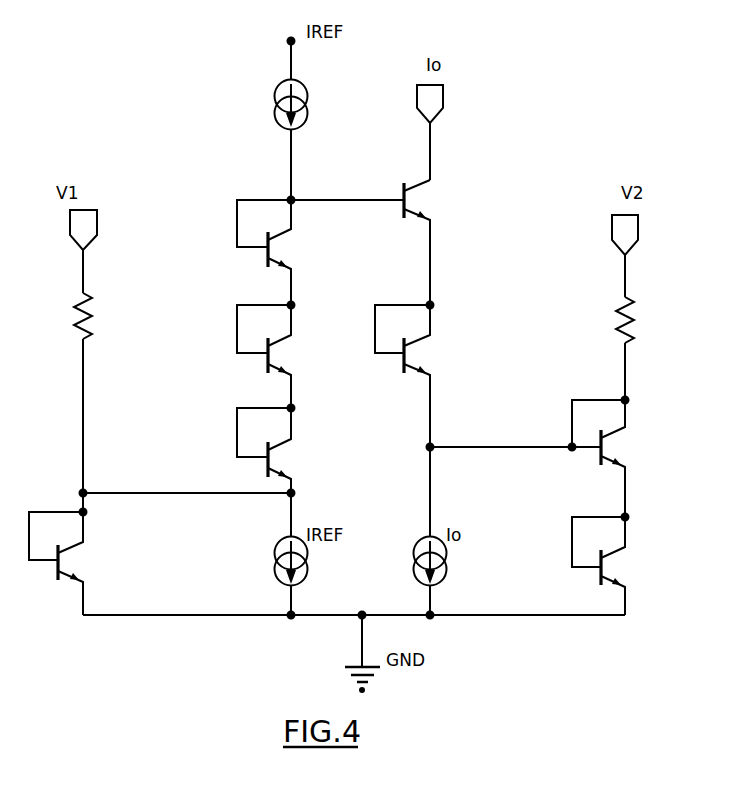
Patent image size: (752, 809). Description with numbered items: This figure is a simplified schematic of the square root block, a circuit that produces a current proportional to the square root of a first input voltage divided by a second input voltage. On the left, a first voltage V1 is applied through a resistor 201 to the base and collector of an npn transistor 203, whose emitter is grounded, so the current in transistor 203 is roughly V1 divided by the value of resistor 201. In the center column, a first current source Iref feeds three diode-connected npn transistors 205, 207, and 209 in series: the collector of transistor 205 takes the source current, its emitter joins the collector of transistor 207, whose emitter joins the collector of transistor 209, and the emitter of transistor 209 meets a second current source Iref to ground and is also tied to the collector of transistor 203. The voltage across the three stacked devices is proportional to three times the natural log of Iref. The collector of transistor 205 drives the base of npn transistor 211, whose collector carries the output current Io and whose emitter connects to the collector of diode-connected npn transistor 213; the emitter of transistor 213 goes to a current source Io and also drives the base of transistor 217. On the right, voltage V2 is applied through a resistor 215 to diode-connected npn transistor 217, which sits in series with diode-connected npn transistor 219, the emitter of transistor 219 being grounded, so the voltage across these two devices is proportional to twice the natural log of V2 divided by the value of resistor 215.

The resistor 201 is at (73, 314).
The npn transistor 203 is at (69, 560).
The npn transistor 205 is at (279, 246).
The npn transistor 207 is at (279, 351).
The npn transistor 209 is at (279, 456).
The npn transistor 211 is at (416, 198).
The npn transistor 213 is at (416, 353).
The resistor 215 is at (617, 315).
The npn transistor 217 is at (614, 445).
The npn transistor 219 is at (614, 565).